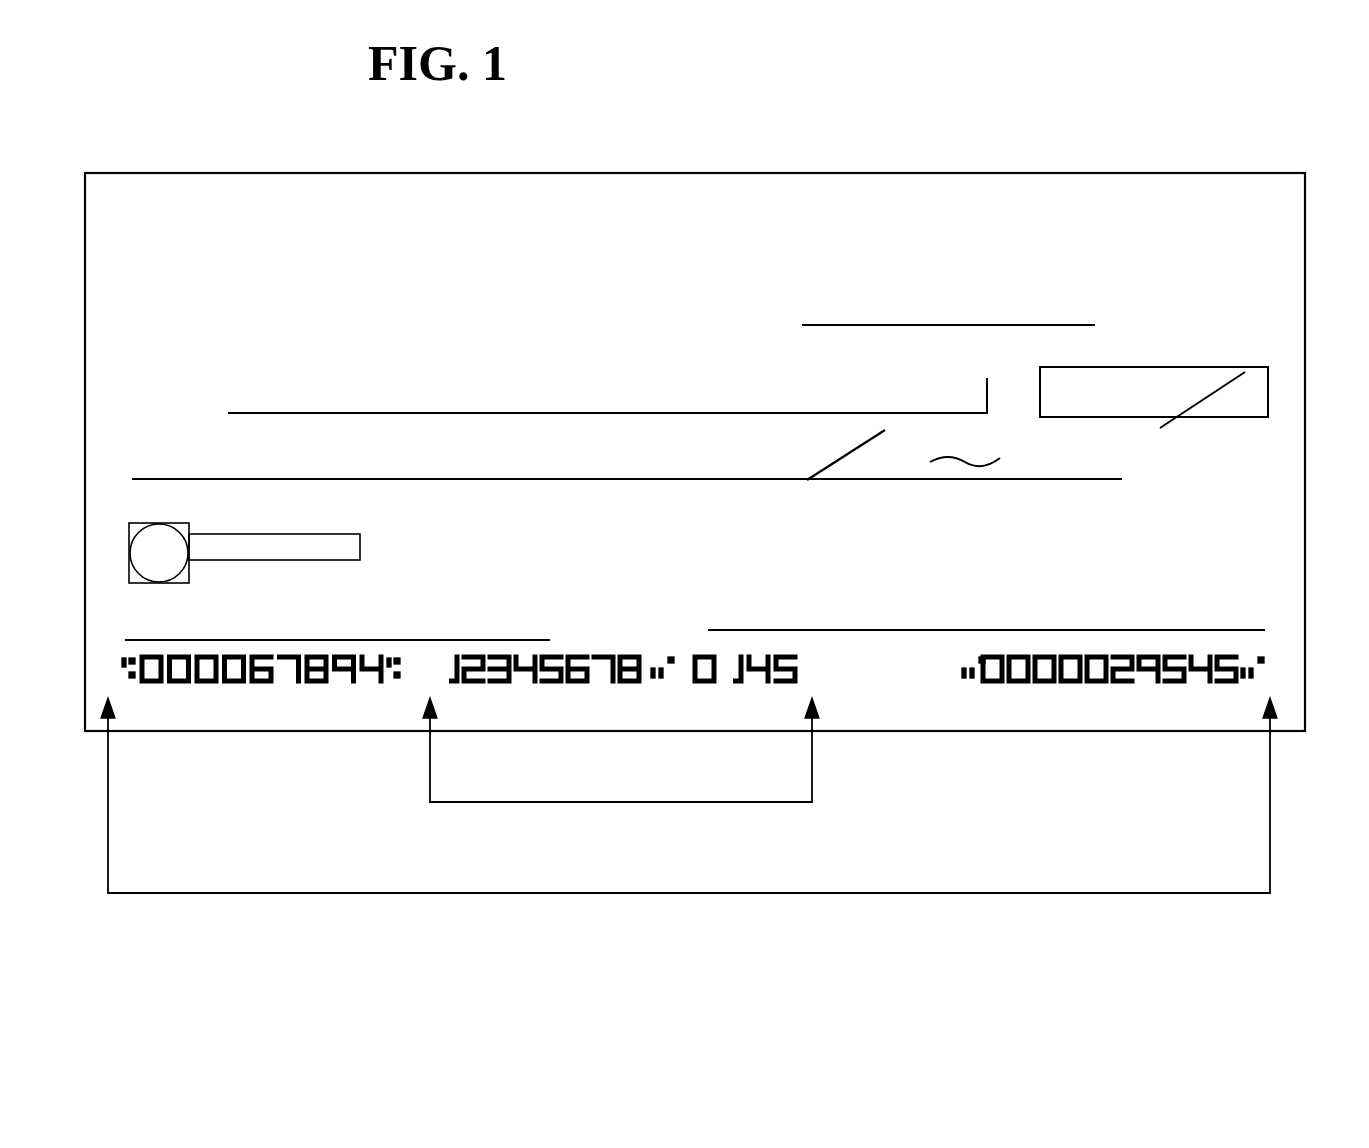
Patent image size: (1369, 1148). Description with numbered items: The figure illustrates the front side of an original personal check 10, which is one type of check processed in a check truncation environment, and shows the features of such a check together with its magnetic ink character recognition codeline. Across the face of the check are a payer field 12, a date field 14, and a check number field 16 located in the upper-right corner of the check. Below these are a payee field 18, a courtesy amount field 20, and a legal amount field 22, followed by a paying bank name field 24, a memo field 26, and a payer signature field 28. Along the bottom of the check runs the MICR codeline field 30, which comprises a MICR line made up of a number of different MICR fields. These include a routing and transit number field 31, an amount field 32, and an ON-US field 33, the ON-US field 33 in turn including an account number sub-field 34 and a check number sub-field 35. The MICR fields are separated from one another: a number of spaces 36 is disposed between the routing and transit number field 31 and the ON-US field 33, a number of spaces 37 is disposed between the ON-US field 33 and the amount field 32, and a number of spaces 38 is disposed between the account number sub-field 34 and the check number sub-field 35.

The personal check 10 is at (1040, 167).
The payer field 12 is at (253, 250).
The date field 14 is at (898, 268).
The check number field 16 is at (1240, 217).
The payee field 18 is at (526, 352).
The courtesy amount field 20 is at (1195, 357).
The legal amount field 22 is at (878, 485).
The paying bank name field 24 is at (353, 540).
The memo field 26 is at (125, 628).
The payer signature field 28 is at (1225, 617).
The MICR codeline field 30 is at (852, 893).
The routing and transit number field 31 is at (266, 717).
The amount field 32 is at (1062, 683).
The ON-US field 33 is at (621, 758).
The account number sub-field 34 is at (519, 685).
The check number sub-field 35 is at (780, 685).
The spaces 36 is at (410, 683).
The spaces 37 is at (881, 680).
The spaces 38 is at (683, 685).